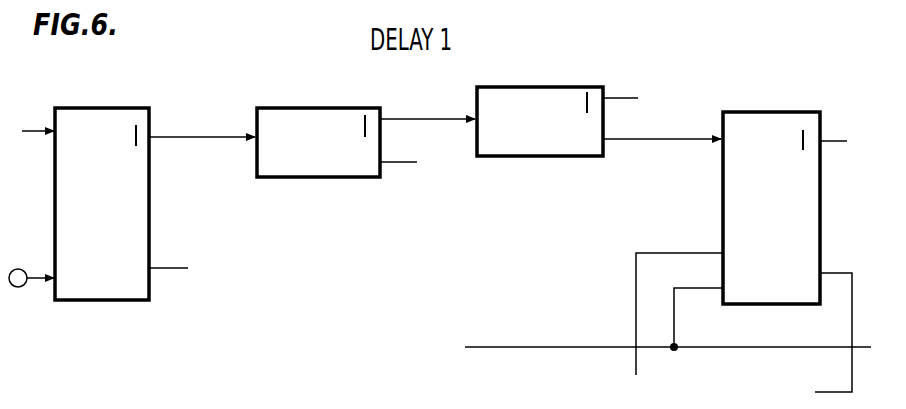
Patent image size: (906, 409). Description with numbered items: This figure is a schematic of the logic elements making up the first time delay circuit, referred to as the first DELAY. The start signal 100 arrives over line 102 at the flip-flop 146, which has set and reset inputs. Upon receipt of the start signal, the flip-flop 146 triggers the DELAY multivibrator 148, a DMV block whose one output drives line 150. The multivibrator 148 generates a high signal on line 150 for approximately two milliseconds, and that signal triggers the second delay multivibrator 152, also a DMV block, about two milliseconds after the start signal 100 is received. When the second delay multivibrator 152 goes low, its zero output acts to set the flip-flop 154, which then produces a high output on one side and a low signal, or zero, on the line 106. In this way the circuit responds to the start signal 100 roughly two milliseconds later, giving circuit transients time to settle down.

The flip-flop 146 is at (89, 108).
The line 102 is at (36, 132).
The start signal 100 is at (22, 287).
The DELAY multivibrator 148 is at (355, 108).
The line 150 is at (442, 117).
The second delay multivibrator 152 is at (535, 87).
The flip-flop 154 is at (736, 112).
The line 106 is at (842, 272).